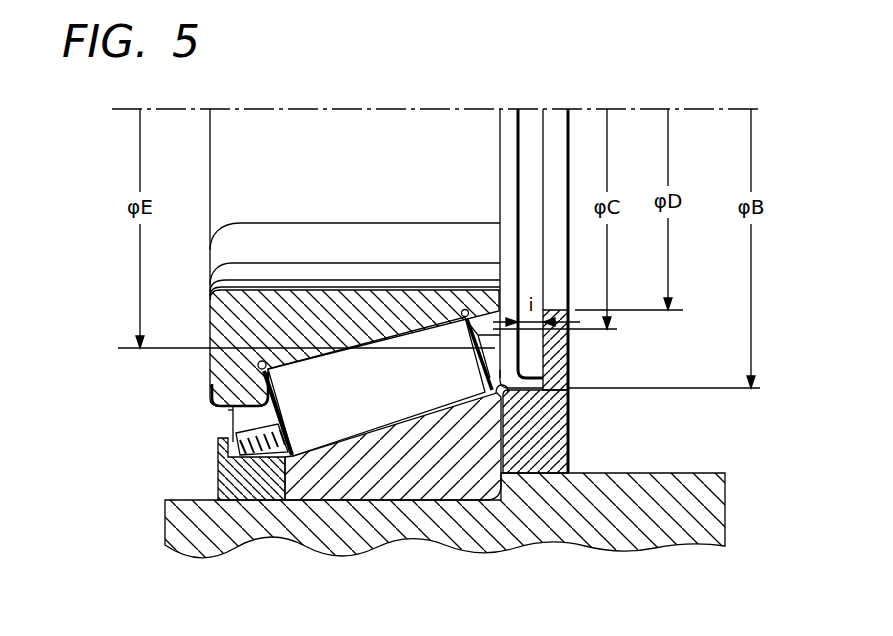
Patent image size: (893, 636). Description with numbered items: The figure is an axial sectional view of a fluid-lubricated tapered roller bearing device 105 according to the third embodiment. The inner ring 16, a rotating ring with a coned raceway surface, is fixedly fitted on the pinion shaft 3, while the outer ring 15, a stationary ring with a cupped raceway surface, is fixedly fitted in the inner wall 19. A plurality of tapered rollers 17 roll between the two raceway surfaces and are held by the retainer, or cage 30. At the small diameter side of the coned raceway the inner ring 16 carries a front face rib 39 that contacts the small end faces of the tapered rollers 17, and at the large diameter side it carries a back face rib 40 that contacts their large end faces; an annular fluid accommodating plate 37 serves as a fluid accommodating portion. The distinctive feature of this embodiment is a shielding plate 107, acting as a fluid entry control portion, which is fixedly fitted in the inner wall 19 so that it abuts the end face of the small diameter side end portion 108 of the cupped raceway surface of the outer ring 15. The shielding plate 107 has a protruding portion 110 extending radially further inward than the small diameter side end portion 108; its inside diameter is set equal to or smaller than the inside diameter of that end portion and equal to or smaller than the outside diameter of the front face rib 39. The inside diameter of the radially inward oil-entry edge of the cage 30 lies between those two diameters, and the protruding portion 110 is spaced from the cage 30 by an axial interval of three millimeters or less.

The pinion shaft 3 is at (353, 128).
The outer ring 15 is at (431, 470).
The inner ring 16 is at (230, 323).
The tapered rollers 17 is at (340, 417).
The inner wall 19 is at (598, 525).
The retainer (cage) 30 is at (233, 420).
The annular fluid accommodating plate 37 is at (252, 480).
The front face rib 39 is at (483, 308).
The back face rib 40 is at (238, 395).
The tapered roller bearing device 105 is at (193, 432).
The shielding plate 107 is at (552, 427).
The small diameter side end portion 108 is at (516, 393).
The protruding portion 110 is at (570, 348).